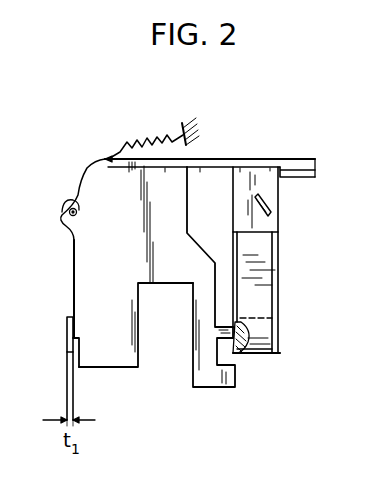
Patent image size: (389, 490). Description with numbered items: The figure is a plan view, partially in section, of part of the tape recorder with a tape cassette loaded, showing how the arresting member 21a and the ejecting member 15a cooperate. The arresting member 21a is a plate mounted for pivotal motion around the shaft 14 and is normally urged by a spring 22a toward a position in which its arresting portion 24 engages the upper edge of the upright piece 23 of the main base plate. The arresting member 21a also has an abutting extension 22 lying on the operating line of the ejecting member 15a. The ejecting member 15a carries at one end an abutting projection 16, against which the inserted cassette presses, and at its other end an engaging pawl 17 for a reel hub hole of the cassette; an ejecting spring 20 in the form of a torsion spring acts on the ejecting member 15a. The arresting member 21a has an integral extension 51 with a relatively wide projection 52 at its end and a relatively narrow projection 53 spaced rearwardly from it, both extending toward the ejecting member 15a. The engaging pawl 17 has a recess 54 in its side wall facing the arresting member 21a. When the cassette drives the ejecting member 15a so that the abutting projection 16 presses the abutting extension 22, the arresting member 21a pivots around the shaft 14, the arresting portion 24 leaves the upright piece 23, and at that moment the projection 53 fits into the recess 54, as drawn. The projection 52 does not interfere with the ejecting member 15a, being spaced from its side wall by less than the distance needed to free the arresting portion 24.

The shaft 14 is at (61, 222).
The ejecting member 15a is at (257, 280).
The abutting projection 16 is at (293, 177).
The engaging pawl 17 is at (268, 345).
The ejecting spring 20 is at (270, 203).
The arresting member 21a is at (105, 182).
The abutting extension 22 is at (292, 160).
The spring 22a is at (142, 147).
The upright piece 23 is at (67, 332).
The arresting portion 24 is at (77, 330).
The extension 51 is at (198, 330).
The projection 52 is at (228, 373).
The projection 53 is at (233, 322).
The recess 54 is at (243, 330).